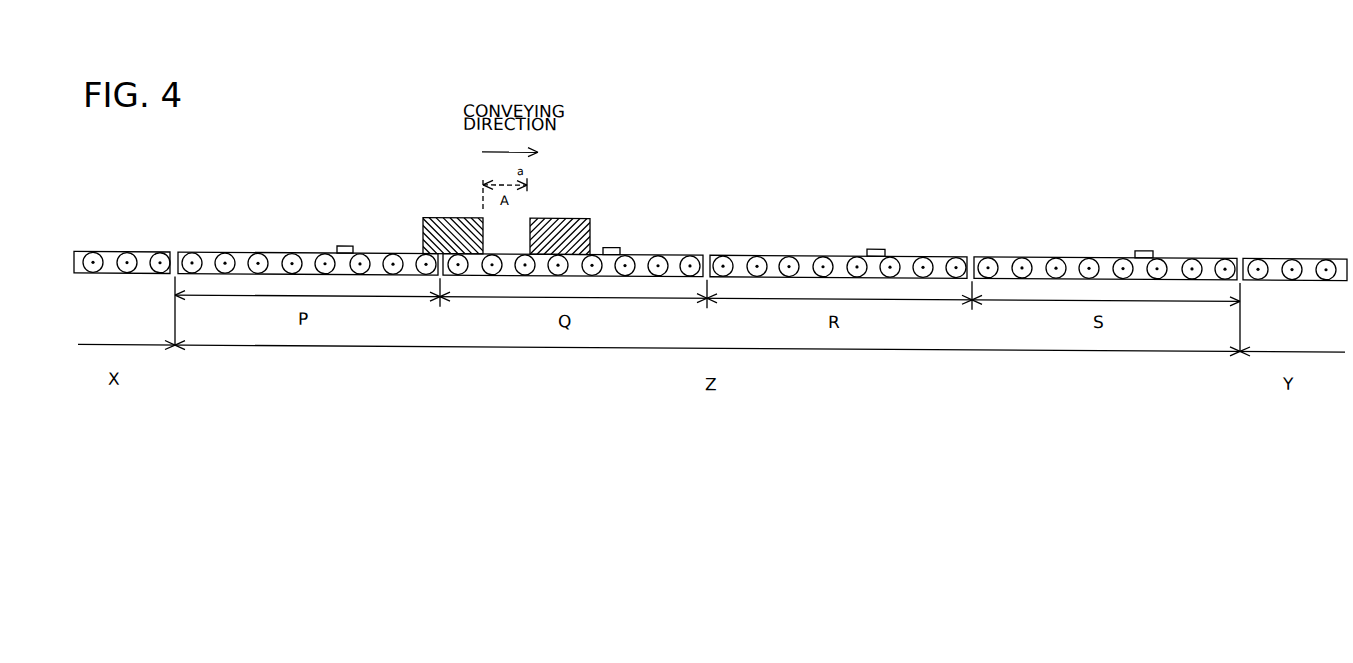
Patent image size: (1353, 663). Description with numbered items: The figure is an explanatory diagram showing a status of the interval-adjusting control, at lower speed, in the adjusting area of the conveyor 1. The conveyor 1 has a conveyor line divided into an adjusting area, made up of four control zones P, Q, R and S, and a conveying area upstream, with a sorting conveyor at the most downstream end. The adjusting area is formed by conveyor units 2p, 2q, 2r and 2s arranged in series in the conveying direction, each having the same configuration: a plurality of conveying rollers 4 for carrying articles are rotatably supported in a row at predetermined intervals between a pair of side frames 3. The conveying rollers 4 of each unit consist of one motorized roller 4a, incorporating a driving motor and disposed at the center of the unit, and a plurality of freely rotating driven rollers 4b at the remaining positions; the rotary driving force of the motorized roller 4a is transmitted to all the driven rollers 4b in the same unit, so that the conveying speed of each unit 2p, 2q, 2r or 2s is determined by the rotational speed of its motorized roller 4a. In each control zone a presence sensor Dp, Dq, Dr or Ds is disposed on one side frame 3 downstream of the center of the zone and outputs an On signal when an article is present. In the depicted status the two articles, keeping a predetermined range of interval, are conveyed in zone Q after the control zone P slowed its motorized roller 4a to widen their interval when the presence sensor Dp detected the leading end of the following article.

The conveyor 1 is at (762, 193).
The conveyor unit 2p is at (308, 192).
The conveyor unit 2q is at (578, 217).
The conveyor unit 2r is at (838, 222).
The conveyor unit 2s is at (1105, 232).
The side frame 3 is at (207, 272).
The conveying rollers 4 is at (741, 327).
The motorized roller 4a is at (288, 272).
The driven rollers 4b is at (360, 272).
The presence sensor Dp is at (340, 244).
The presence sensor Dq is at (615, 240).
The presence sensor Dr is at (874, 241).
The presence sensor Ds is at (1144, 241).